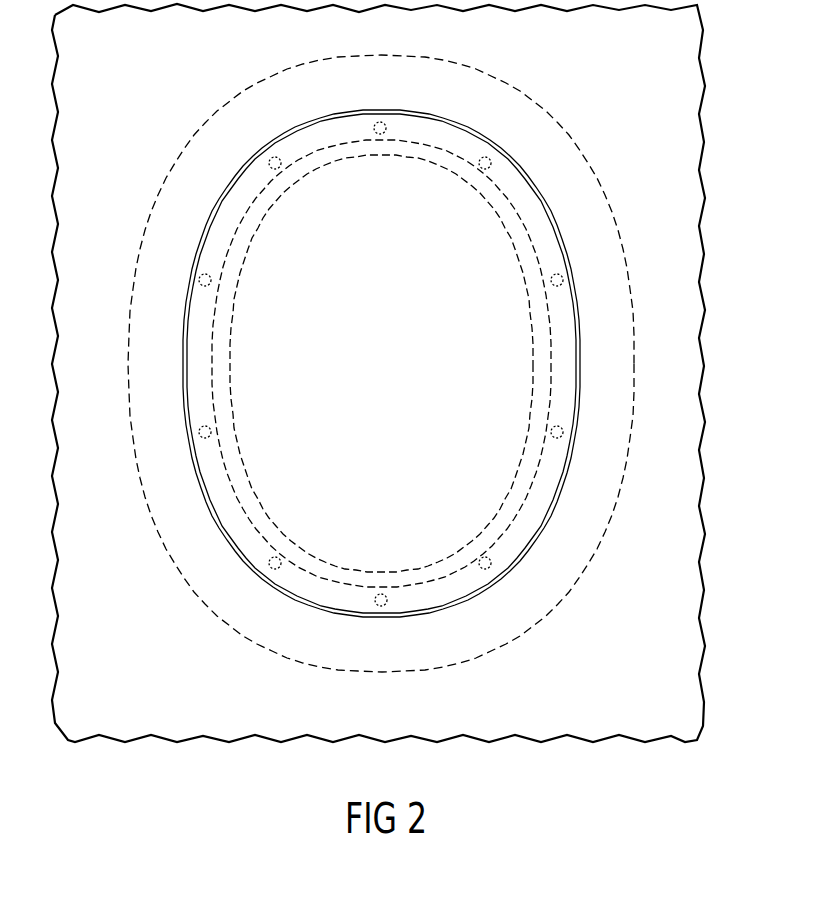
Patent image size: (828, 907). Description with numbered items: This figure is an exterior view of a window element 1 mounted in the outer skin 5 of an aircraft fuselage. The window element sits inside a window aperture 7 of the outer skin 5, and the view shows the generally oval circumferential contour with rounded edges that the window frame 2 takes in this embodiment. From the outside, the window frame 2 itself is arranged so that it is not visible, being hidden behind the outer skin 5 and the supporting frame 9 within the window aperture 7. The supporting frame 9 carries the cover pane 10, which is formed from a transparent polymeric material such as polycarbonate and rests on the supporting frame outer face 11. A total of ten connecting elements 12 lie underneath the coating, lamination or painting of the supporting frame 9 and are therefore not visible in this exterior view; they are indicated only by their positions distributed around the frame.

The window element 1 is at (614, 101).
The window frame 2 is at (176, 157).
The outer skin 5 is at (697, 170).
The window aperture 7 is at (562, 508).
The supporting frame 9 is at (557, 229).
The cover pane 10 is at (366, 378).
The supporting frame outer face 11 is at (550, 365).
The connecting elements 12 is at (382, 121).